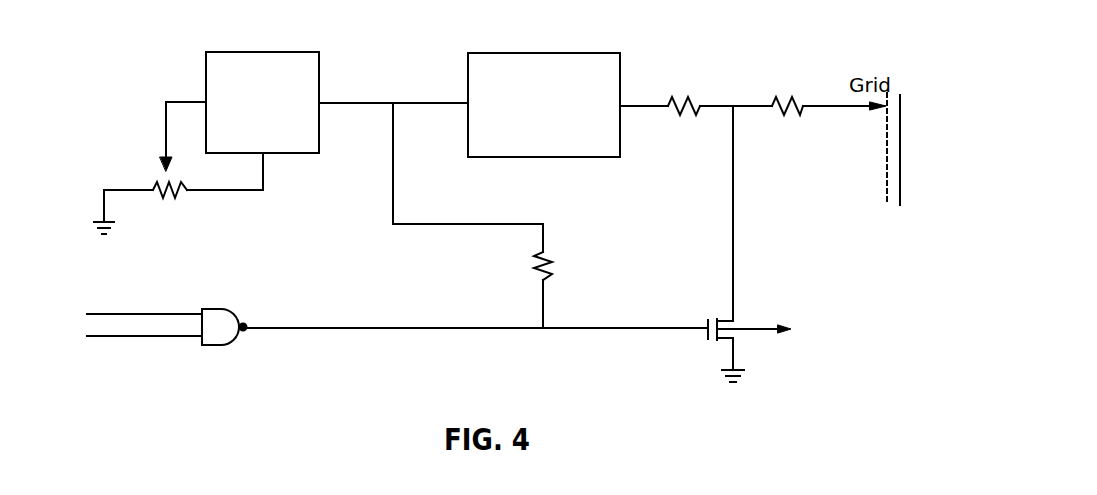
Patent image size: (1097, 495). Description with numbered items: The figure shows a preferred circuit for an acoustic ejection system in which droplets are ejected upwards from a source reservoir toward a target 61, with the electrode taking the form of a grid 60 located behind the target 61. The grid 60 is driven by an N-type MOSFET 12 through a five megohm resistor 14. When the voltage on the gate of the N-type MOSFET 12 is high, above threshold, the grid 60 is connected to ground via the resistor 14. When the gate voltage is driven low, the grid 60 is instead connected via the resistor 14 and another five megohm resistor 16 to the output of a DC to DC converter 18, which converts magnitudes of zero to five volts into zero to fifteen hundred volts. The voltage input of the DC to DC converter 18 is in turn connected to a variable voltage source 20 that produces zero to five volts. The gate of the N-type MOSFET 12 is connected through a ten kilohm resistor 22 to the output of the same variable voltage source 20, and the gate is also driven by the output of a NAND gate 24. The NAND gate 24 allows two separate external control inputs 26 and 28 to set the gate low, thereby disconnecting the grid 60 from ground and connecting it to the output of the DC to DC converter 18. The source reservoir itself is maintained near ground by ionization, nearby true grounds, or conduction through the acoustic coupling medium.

The N-type MOSFET 12 is at (749, 333).
The resistor 14 is at (787, 120).
The resistor 16 is at (684, 120).
The DC to DC converter 18 is at (544, 92).
The variable voltage source 20 is at (206, 130).
The resistor 22 is at (559, 267).
The NAND gate 24 is at (224, 314).
The external control input 26 is at (144, 301).
The external control input 28 is at (144, 348).
The grid 60 is at (870, 149).
The target 61 is at (914, 150).